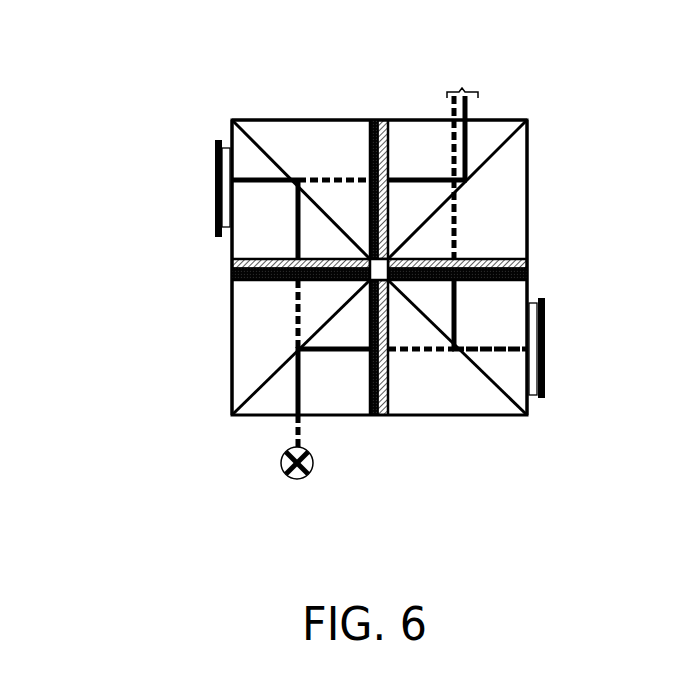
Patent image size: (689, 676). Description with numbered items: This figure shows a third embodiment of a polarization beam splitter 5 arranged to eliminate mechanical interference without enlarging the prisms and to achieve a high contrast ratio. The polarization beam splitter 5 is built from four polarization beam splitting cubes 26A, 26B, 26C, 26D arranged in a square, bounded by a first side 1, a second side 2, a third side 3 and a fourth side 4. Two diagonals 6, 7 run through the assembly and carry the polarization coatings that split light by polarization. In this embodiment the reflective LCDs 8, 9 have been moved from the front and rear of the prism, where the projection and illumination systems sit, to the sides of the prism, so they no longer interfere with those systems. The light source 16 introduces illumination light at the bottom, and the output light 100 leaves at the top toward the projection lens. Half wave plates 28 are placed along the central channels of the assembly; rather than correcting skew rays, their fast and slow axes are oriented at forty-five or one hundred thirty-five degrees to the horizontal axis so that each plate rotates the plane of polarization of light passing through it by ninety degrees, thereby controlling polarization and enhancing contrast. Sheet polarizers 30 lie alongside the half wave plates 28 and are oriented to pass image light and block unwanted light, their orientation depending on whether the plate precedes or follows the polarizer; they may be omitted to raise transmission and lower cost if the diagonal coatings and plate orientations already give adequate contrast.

The first side of polarization beam splitter 1 is at (252, 415).
The second side of polarization beam splitter 2 is at (498, 120).
The third side of polarization beam splitter 3 is at (232, 332).
The fourth side of polarization beam splitter 4 is at (527, 215).
The polarization beam splitter 5 is at (118, 190).
The diagonal of polarization beam splitter 6 is at (490, 160).
The diagonal of polarization beam splitter 7 is at (262, 143).
The reflective LCD 8 is at (545, 350).
The reflective LCD 9 is at (216, 190).
The light source 16 is at (290, 478).
The polarization beam splitting cube 26A is at (288, 333).
The polarization beam splitting cube 26B is at (238, 230).
The polarization beam splitting cube 26C is at (515, 333).
The polarization beam splitting cube 26D is at (517, 230).
The half wave plate 28 is at (384, 120).
The sheet polarizer 30 is at (373, 120).
The output light to projection lens 100 is at (458, 113).